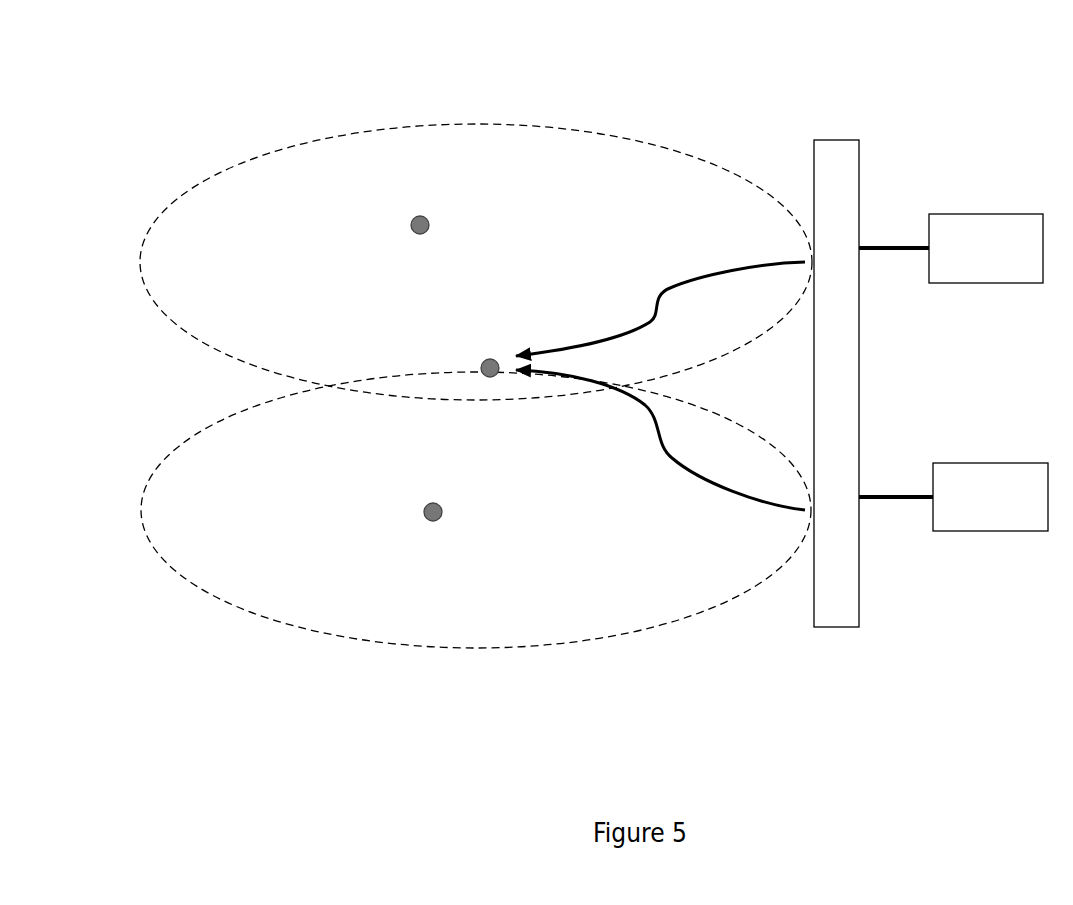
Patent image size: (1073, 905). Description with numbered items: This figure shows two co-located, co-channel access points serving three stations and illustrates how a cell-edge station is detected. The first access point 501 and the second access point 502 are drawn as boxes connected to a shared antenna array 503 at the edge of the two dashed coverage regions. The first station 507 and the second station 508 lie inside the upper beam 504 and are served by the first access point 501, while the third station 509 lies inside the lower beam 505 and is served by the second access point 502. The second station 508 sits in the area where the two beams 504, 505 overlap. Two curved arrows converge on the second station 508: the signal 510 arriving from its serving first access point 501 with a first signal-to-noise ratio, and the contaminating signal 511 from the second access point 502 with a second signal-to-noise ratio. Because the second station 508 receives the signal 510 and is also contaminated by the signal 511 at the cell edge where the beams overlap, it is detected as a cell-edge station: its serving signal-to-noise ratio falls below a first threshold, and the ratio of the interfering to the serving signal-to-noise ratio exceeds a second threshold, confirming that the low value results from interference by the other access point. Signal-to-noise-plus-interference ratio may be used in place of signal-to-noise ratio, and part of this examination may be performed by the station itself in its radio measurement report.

The access point AP1 501 is at (1021, 208).
The access point AP2 502 is at (1024, 456).
The antenna array 503 is at (849, 134).
The coverage area of AP1 504 is at (504, 118).
The coverage area of AP2 505 is at (519, 654).
The Station 1 507 is at (320, 222).
The Station 2 508 is at (407, 348).
The Station 3 509 is at (333, 509).
The signal from AP1 510 is at (691, 266).
The signal from AP2 511 is at (679, 481).